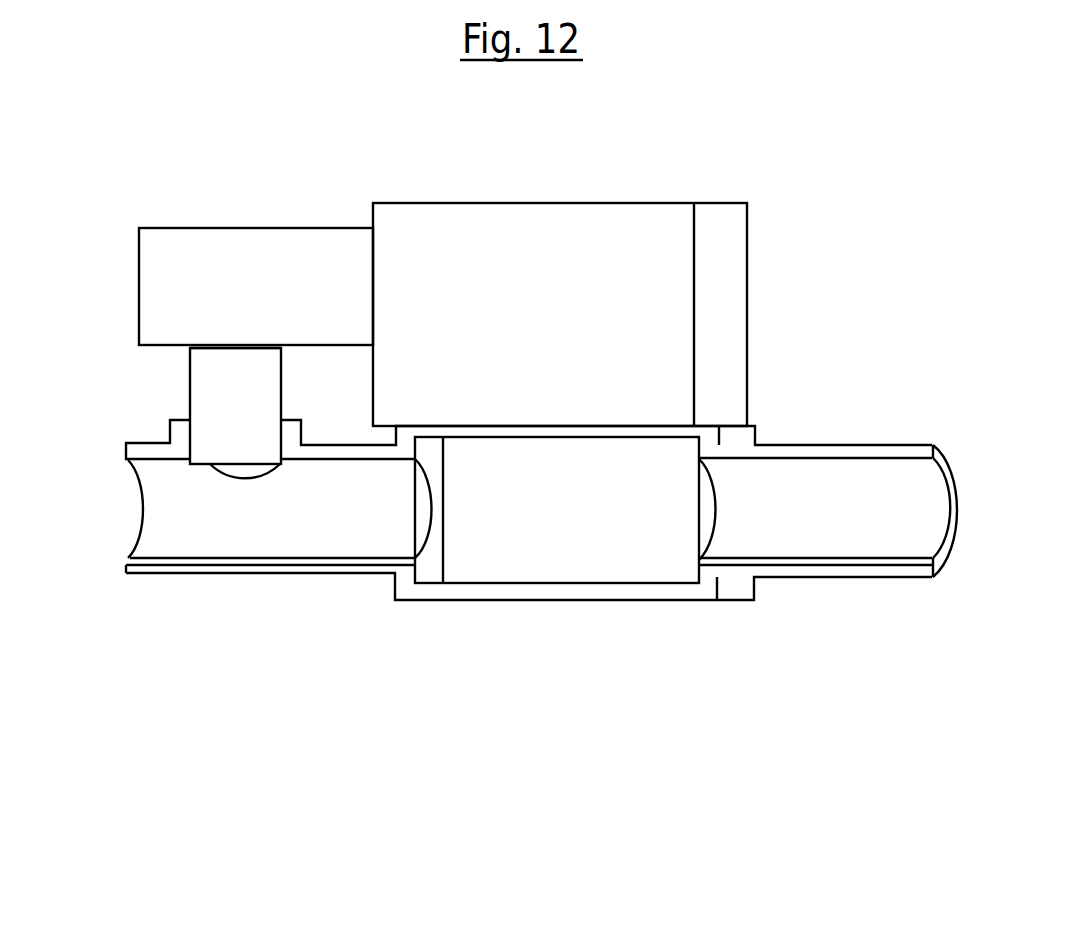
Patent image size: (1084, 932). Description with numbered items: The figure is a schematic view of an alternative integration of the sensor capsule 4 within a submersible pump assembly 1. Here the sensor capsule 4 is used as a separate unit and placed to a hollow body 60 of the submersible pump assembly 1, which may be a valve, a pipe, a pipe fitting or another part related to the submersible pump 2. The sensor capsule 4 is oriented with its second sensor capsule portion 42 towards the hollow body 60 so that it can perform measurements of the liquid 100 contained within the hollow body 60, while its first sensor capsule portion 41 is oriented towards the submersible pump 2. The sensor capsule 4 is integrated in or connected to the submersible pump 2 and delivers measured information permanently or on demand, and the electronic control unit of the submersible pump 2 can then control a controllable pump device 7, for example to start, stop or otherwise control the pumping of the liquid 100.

The submersible pump assembly 1 is at (612, 655).
The submersible pump 2 is at (243, 305).
The sensor capsule 4 is at (241, 400).
The controllable pump device 7 is at (489, 345).
The first sensor capsule portion 41 is at (168, 366).
The second sensor capsule portion 42 is at (160, 430).
The hollow body 60 is at (360, 533).
The liquid 100 is at (574, 511).